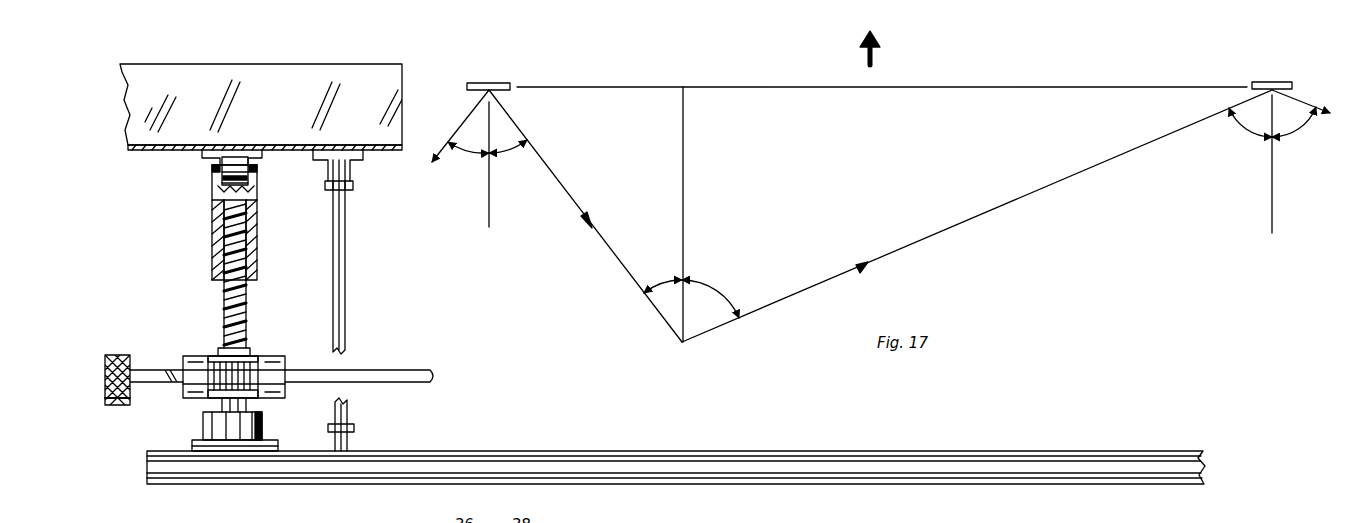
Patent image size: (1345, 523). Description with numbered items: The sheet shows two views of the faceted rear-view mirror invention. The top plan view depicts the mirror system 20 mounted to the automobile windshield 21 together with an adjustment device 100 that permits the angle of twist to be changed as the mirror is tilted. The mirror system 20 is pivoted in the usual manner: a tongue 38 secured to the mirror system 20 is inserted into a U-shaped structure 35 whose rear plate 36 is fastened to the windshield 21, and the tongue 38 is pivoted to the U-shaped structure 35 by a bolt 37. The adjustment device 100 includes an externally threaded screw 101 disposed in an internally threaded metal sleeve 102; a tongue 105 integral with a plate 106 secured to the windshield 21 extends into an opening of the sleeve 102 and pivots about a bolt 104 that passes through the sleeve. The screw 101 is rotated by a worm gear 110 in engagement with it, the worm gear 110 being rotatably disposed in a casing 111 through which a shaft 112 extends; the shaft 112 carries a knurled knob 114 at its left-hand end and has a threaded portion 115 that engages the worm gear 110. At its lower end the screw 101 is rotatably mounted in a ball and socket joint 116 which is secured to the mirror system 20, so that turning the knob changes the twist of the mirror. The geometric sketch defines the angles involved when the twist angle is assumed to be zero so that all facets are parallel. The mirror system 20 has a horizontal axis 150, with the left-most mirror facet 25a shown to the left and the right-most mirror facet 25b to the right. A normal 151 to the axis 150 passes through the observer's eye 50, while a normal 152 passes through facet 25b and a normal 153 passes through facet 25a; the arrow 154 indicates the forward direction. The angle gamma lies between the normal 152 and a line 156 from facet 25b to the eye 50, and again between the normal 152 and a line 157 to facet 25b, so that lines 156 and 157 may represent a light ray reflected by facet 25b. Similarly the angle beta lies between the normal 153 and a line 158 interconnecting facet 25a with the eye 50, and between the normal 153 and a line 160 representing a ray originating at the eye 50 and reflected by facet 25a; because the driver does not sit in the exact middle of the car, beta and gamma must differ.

In FIG. 12, the mirror system 20 is at (895, 448).
In FIG. 17, the mirror system 20 is at (778, 82).
In FIG. 12, the windshield 21 is at (392, 150).
In FIG. 17, the left-most mirror facet 25a is at (489, 82).
In FIG. 17, the right-most mirror facet 25b is at (1270, 81).
In FIG. 12, the U-shaped structure 35 is at (352, 170).
In FIG. 12, the rear plate 36 is at (352, 147).
In FIG. 12, the bolt 37 is at (330, 190).
In FIG. 12, the tongue 38 is at (346, 296).
In FIG. 17, the observer's eye 50 is at (682, 343).
In FIG. 12, the adjustment device 100 is at (264, 300).
In FIG. 12, the screw 101 is at (240, 322).
In FIG. 12, the metal sleeve 102 is at (216, 236).
In FIG. 12, the bolt 104 is at (212, 174).
In FIG. 12, the tongue 105 is at (232, 162).
In FIG. 12, the plate 106 is at (265, 158).
In FIG. 12, the worm gear 110 is at (240, 372).
In FIG. 12, the casing 111 is at (196, 364).
In FIG. 12, the shaft 112 is at (432, 380).
In FIG. 12, the knurled knob 114 is at (105, 398).
In FIG. 12, the threaded portion 115 is at (300, 384).
In FIG. 12, the ball and socket joint 116 is at (200, 422).
In FIG. 17, the horizontal axis 150 is at (688, 87).
In FIG. 17, the normal 151 is at (685, 174).
In FIG. 17, the normal 152 is at (1272, 208).
In FIG. 17, the normal 153 is at (491, 209).
In FIG. 17, the arrow 154 is at (878, 55).
In FIG. 17, the line 156 is at (1000, 205).
In FIG. 17, the line 157 is at (1303, 102).
In FIG. 17, the line 158 is at (548, 160).
In FIG. 17, the line 160 is at (455, 134).